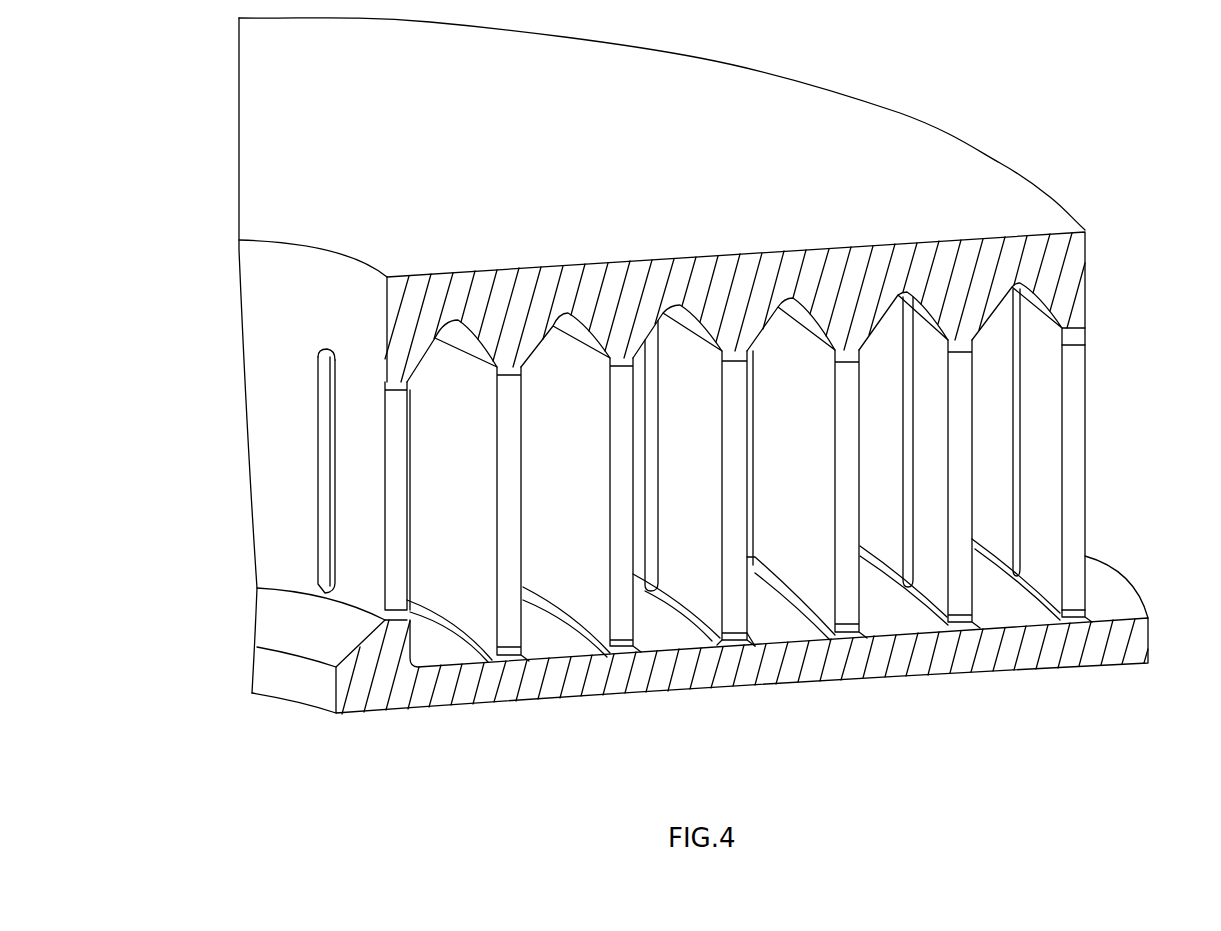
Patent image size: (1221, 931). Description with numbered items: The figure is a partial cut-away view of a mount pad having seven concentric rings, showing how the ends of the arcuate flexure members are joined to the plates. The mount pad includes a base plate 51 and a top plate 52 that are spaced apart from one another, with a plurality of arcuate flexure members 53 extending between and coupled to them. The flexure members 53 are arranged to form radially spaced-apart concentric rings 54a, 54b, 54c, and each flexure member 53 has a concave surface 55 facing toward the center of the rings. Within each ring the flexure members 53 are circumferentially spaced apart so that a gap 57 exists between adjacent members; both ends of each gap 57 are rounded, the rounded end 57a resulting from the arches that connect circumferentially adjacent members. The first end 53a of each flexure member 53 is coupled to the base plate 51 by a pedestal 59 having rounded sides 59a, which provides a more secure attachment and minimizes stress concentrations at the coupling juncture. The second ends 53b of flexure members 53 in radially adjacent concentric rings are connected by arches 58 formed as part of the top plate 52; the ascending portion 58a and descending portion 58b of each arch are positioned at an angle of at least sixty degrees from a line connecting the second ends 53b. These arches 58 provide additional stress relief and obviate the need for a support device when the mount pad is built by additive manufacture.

The base plate 51 is at (1135, 634).
The top plate 52 is at (1077, 272).
The arcuate flexure member 53 is at (848, 602).
The first end 53a is at (1078, 616).
The second end 53b is at (1085, 336).
The concentric ring 54a is at (401, 594).
The concentric ring 54b is at (512, 597).
The concentric ring 54c is at (622, 630).
The concave surface 55 is at (572, 488).
The gap 57 is at (325, 479).
The rounded end 57a is at (318, 363).
The arch 58 is at (432, 345).
The ascending portion of the arch 58a is at (540, 345).
The descending portion of the arch 58b is at (700, 338).
The pedestal 59 is at (742, 640).
The rounded sides 59a is at (708, 630).